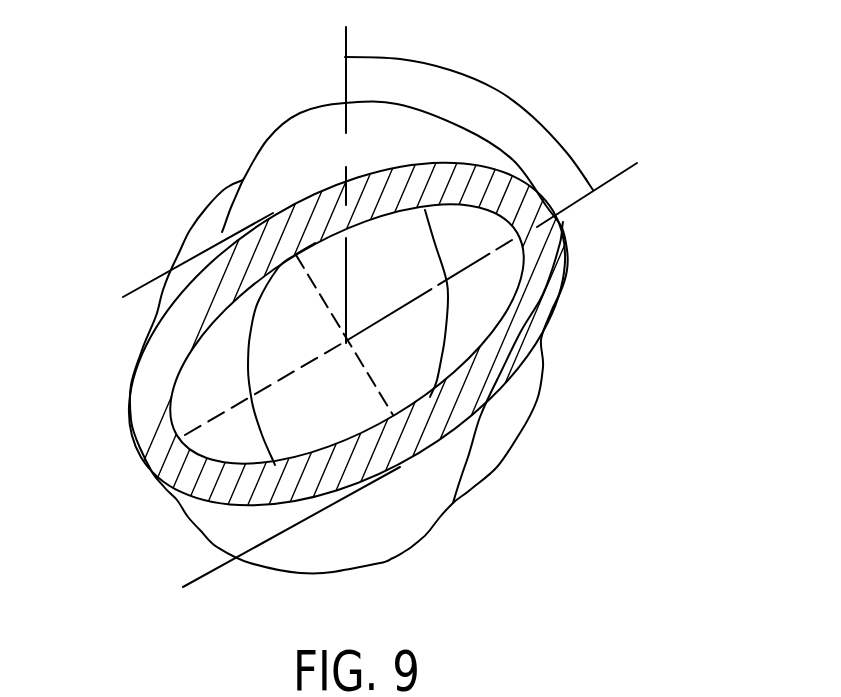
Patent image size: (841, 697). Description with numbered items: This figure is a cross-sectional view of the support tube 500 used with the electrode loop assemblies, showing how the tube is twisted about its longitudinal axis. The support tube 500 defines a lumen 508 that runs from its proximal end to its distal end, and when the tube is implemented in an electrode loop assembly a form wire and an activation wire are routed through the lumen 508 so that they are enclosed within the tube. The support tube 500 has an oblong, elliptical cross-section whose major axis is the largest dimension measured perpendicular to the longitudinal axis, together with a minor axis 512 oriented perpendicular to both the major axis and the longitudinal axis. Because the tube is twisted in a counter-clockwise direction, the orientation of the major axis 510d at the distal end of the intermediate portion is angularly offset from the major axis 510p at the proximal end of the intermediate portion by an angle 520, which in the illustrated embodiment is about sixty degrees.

The support tube 500 is at (165, 141).
The lumen 508 is at (222, 382).
The major axis at the distal end of the intermediate portion 510d is at (347, 85).
The major axis at the proximal end of the intermediate portion 510p is at (570, 205).
The minor axis 512 is at (377, 387).
The angle 520 is at (498, 88).